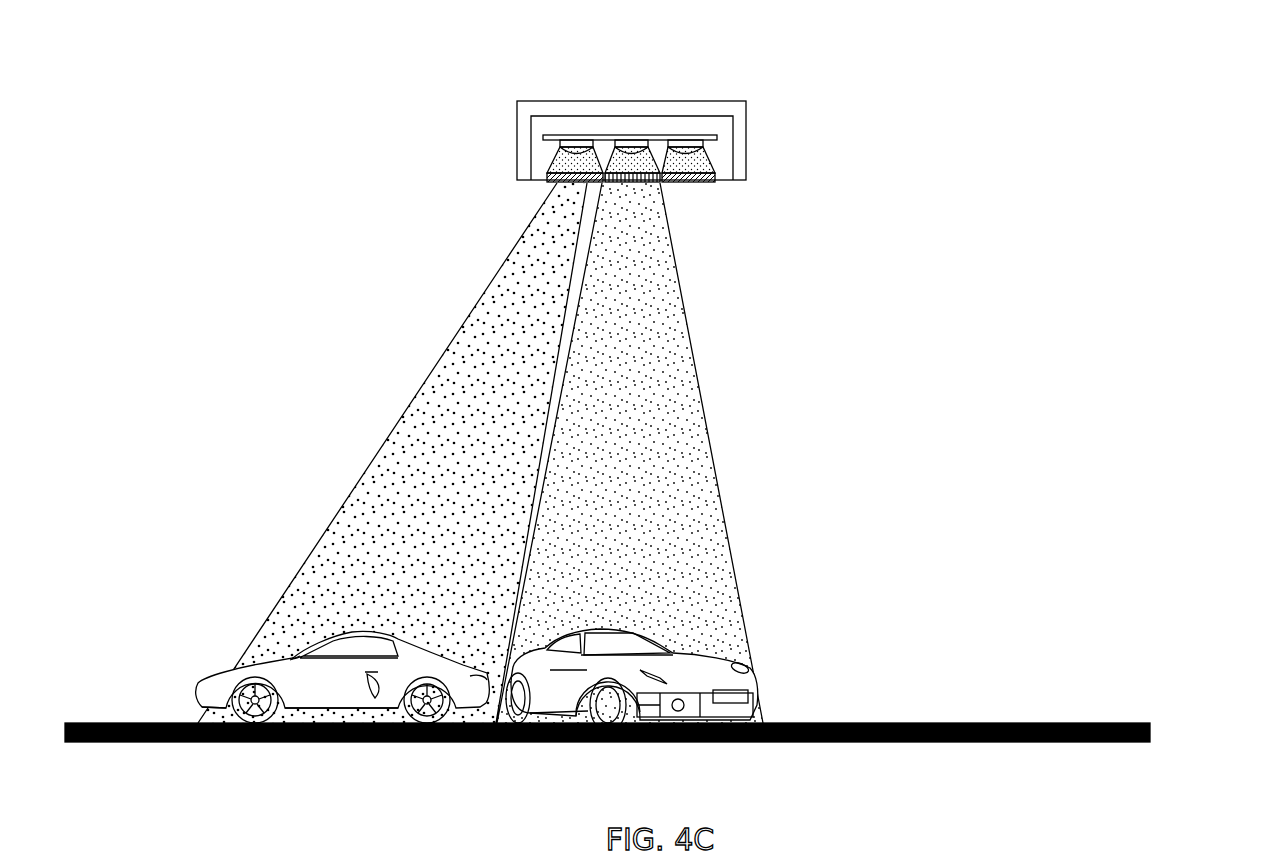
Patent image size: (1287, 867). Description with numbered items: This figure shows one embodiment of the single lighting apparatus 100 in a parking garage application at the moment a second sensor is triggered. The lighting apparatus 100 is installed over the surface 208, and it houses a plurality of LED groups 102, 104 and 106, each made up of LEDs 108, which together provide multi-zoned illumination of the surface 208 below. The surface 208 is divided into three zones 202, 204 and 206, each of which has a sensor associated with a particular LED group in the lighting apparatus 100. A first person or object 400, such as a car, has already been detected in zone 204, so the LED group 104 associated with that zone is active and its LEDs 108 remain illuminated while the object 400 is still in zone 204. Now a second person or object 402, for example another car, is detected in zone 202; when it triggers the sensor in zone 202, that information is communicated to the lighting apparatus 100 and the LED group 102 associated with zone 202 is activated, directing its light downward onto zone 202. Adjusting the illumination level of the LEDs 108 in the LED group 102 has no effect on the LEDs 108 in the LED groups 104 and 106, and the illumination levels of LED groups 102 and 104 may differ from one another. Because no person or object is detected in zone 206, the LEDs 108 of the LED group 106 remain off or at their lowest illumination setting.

The lighting apparatus 100 is at (746, 133).
The LED group 102 is at (570, 140).
The LED group 104 is at (628, 140).
The LED group 106 is at (688, 140).
The LEDs 108 is at (575, 184).
The zone 202 is at (363, 776).
The zone 204 is at (657, 776).
The zone 206 is at (987, 776).
The surface 208 is at (1150, 732).
The person or object 400 is at (623, 630).
The person or object 402 is at (237, 660).